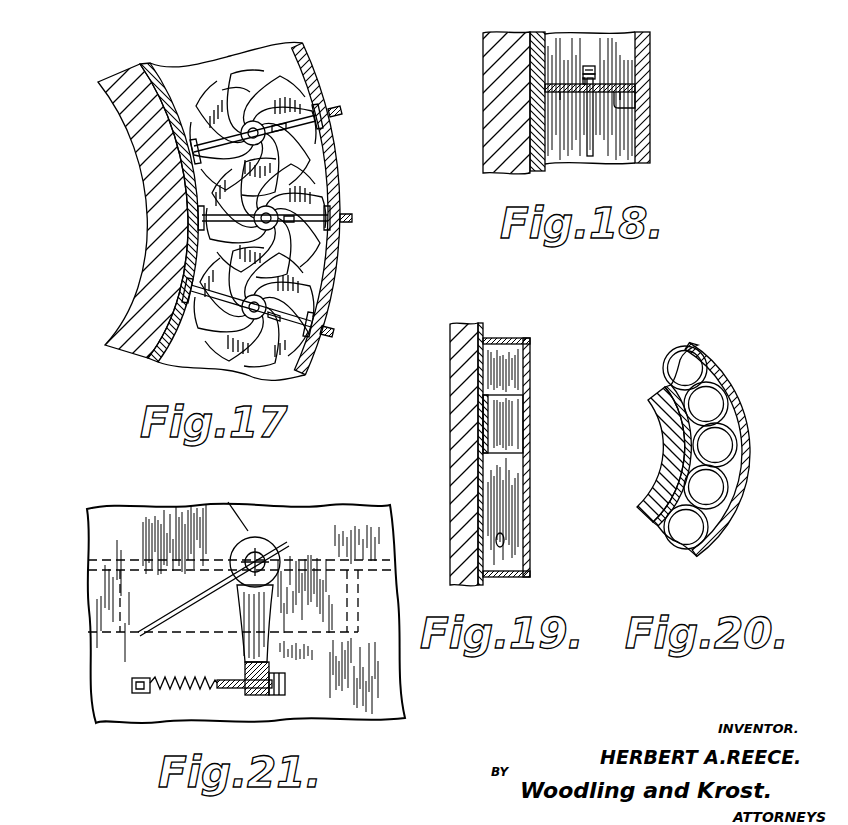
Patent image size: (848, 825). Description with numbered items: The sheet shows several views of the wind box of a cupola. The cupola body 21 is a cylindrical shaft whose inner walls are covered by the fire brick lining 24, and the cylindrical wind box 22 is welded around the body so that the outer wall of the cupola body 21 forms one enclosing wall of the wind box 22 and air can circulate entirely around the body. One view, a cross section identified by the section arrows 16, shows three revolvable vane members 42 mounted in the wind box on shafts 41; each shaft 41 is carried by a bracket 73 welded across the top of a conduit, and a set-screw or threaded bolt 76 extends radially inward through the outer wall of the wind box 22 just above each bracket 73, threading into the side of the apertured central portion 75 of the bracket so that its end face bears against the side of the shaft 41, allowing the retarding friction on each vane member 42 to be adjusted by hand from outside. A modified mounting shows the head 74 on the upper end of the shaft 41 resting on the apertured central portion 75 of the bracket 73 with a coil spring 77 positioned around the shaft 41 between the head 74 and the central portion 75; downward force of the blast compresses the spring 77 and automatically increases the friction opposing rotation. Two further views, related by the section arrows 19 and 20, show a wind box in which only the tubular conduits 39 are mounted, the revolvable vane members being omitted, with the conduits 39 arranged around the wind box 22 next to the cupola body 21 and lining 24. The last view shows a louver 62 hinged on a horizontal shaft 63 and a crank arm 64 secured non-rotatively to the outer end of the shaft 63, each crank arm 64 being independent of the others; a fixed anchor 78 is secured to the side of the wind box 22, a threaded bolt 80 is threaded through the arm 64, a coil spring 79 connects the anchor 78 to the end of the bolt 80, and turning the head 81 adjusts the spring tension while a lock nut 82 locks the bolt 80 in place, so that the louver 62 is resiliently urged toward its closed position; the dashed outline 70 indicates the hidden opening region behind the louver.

In FIG. 17, the section line 16- 16 is at (97, 218).
In FIG. 20, the section line 19- 19 is at (617, 452).
In FIG. 19, the section line 20- 20 is at (422, 376).
In FIG. 17, the cupola body 21 is at (169, 212).
In FIG. 18, the cupola body 21 is at (532, 35).
In FIG. 19, the cupola body 21 is at (472, 477).
In FIG. 20, the cupola body 21 is at (670, 478).
In FIG. 17, the wind box 22 is at (305, 50).
In FIG. 18, the wind box 22 is at (640, 40).
In FIG. 19, the wind box 22 is at (529, 500).
In FIG. 20, the wind box 22 is at (714, 350).
In FIG. 21, the wind box 22 is at (355, 508).
In FIG. 17, the fire brick lining 24 is at (150, 178).
In FIG. 18, the fire brick lining 24 is at (486, 47).
In FIG. 19, the fire brick lining 24 is at (452, 404).
In FIG. 20, the fire brick lining 24 is at (650, 398).
In FIG. 19, the tubular conduit 39 is at (520, 425).
In FIG. 20, the tubular conduit 39 is at (716, 358).
In FIG. 17, the shaft 41 is at (245, 80).
In FIG. 18, the shaft 41 is at (594, 132).
In FIG. 17, the revolvable vane member 42 is at (285, 78).
In FIG. 21, the louver 62 is at (190, 600).
In FIG. 21, the shaft 63 is at (275, 554).
In FIG. 21, the crank arm 64 is at (268, 652).
In FIG. 21, the slot 70 is at (362, 622).
In FIG. 17, the bracket 73 is at (188, 142).
In FIG. 18, the bracket 73 is at (638, 106).
In FIG. 17, the head 74 is at (226, 90).
In FIG. 18, the head 74 is at (592, 66).
In FIG. 18, the apertured central portion 75 is at (584, 80).
In FIG. 17, the set-screw or threaded bolt 76 is at (342, 106).
In FIG. 18, the coil spring 77 is at (596, 74).
In FIG. 21, the fixed anchor 78 is at (132, 684).
In FIG. 21, the coil spring 79 is at (186, 676).
In FIG. 21, the threaded bolt 80 is at (240, 680).
In FIG. 21, the head 81 is at (290, 680).
In FIG. 21, the lock nut 82 is at (270, 692).